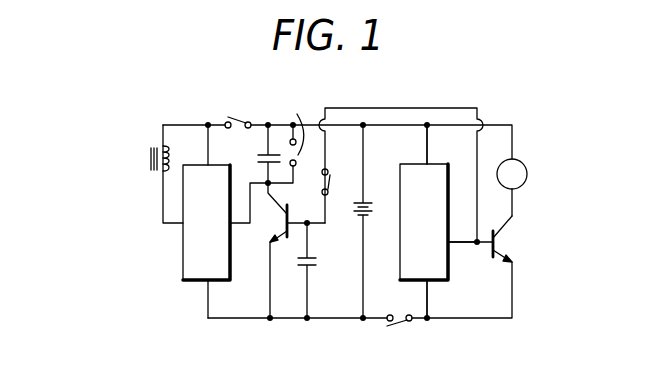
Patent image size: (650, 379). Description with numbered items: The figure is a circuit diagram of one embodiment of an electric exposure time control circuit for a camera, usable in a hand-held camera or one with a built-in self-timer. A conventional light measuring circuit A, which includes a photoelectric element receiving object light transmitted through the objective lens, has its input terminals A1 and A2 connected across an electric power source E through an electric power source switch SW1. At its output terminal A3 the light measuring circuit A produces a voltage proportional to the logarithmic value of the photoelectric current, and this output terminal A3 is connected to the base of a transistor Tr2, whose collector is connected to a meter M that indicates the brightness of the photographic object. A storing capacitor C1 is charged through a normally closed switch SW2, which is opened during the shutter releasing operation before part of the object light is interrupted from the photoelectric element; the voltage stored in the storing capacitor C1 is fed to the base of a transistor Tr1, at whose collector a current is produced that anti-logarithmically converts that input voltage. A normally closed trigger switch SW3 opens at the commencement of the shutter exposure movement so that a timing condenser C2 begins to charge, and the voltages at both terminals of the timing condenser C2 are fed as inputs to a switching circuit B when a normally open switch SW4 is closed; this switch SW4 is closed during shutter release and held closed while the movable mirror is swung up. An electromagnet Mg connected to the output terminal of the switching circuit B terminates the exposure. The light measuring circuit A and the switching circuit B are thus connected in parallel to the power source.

The electromagnet Mg is at (145, 150).
The normally open switch SW4 is at (237, 112).
The normally closed trigger switch SW3 is at (288, 140).
The timing condenser C2 is at (256, 154).
The switching circuit B is at (206, 222).
The transistor Tr1 is at (288, 250).
The storing capacitor C1 is at (317, 270).
The normally closed switch SW2 is at (341, 184).
The electric power source E is at (368, 221).
The light measuring circuit A is at (424, 222).
The input terminal A2 is at (427, 163).
The output terminal A3 is at (460, 236).
The input terminal A1 is at (434, 291).
The electric power source switch SW1 is at (396, 310).
The meter M is at (512, 174).
The transistor Tr2 is at (512, 239).